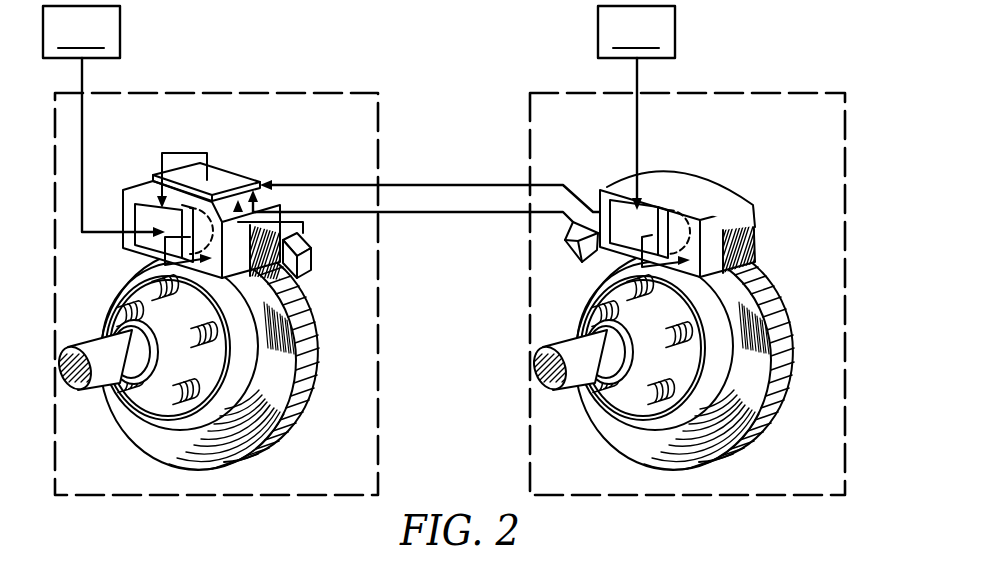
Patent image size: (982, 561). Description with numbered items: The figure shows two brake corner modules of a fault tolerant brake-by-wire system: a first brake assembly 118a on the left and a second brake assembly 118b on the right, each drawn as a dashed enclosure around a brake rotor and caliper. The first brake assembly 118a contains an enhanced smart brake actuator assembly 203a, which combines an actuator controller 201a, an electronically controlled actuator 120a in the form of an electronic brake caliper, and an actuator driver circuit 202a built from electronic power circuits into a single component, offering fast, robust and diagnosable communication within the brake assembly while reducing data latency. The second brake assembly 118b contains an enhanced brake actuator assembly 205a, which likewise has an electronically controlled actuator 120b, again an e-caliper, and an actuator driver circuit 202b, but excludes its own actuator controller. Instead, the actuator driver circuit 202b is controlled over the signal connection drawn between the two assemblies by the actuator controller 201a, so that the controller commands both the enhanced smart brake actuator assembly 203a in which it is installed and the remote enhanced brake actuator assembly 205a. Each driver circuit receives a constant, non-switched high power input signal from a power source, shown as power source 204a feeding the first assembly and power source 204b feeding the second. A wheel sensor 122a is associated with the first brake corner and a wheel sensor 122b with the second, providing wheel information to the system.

The first brake assembly 118a is at (280, 88).
The second brake assembly 118b is at (722, 88).
The electronically controlled actuator 120a is at (238, 264).
The electronically controlled actuator 120b is at (717, 198).
The wheel sensor 122a is at (312, 244).
The wheel sensor 122b is at (567, 240).
The actuator controller 201a is at (221, 181).
The actuator driver circuit 202a is at (127, 189).
The actuator driver circuit 202b is at (627, 218).
The enhanced smart brake actuator assembly 203a is at (253, 158).
The power source 204a is at (104, 121).
The power source 204b is at (636, 108).
The enhanced brake actuator assembly 205a is at (696, 155).